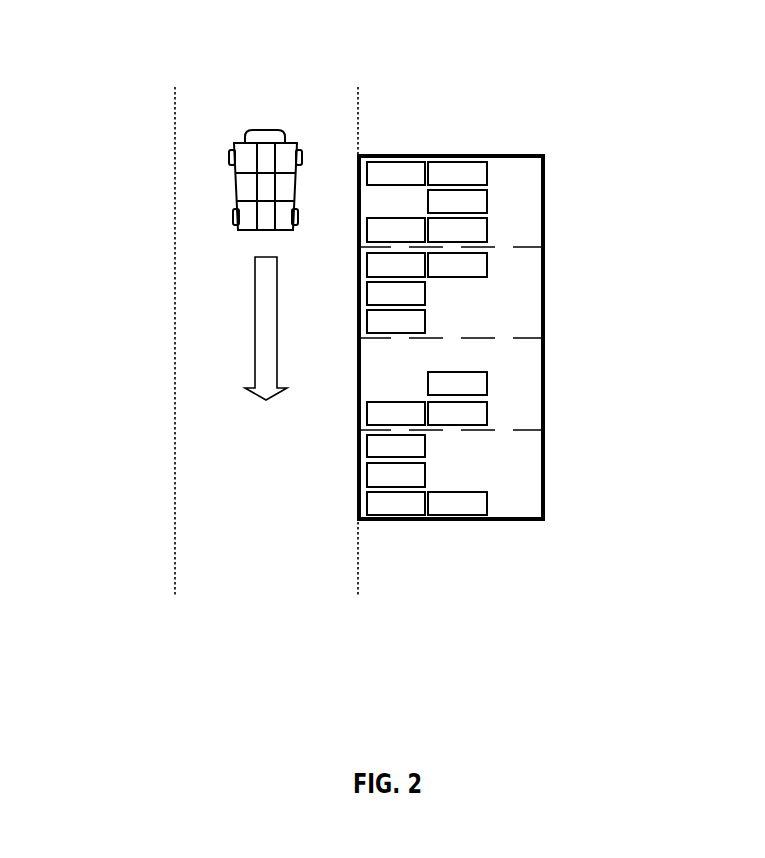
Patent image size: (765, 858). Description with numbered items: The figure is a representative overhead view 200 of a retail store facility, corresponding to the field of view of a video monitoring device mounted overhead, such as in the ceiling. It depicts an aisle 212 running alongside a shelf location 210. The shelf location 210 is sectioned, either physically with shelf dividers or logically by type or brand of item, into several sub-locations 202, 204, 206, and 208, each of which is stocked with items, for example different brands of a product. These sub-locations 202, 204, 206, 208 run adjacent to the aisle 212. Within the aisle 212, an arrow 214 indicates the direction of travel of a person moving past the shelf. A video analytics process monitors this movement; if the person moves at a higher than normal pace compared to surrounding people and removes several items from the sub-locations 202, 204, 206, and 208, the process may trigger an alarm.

The overhead view 200 is at (99, 55).
The sub-location 202 is at (568, 197).
The sub-location 204 is at (568, 292).
The sub-location 206 is at (568, 383).
The sub-location 208 is at (568, 468).
The shelf location 210 is at (542, 647).
The aisle 212 is at (353, 647).
The arrow 214 is at (255, 325).